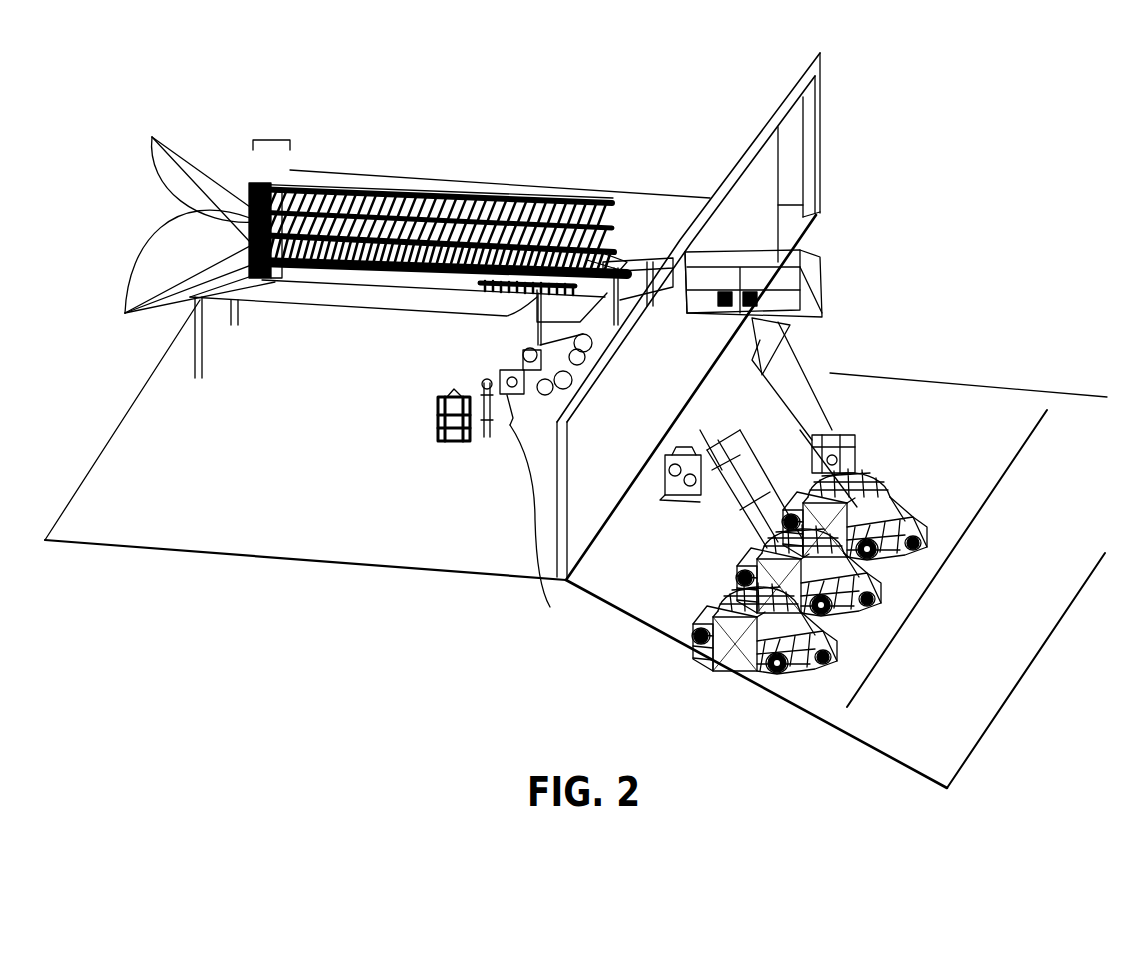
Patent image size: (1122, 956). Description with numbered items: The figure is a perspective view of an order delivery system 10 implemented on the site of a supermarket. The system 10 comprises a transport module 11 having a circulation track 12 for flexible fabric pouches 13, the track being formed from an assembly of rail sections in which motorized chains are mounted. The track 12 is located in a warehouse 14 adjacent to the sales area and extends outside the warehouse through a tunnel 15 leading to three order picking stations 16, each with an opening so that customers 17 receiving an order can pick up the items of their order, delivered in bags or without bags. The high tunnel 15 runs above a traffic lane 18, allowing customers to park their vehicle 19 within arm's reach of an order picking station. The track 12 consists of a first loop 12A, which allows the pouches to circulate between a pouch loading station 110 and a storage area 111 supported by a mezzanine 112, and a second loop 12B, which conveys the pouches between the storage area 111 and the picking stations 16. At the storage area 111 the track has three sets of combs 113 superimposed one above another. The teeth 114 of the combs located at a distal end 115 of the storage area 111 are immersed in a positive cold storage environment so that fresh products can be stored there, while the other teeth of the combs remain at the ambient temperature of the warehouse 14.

The order delivery system 10 is at (526, 619).
The transport module 11 is at (300, 432).
The pouch loading station 110 is at (440, 465).
The storage area 111 is at (408, 207).
The mezzanine 112 is at (287, 288).
The combs 113 is at (320, 185).
The teeth 114 is at (192, 178).
The distal end 115 is at (273, 140).
The circulation track 12 is at (550, 280).
The first loop 12A is at (610, 300).
The second loop 12B is at (633, 265).
The flexible fabric pouches 13 is at (340, 418).
The warehouse 14 is at (480, 540).
The tunnel 15 is at (800, 270).
The order picking stations 16 is at (838, 465).
The customers 17 is at (838, 480).
The traffic lane 18 is at (660, 547).
The vehicle 19 is at (920, 550).